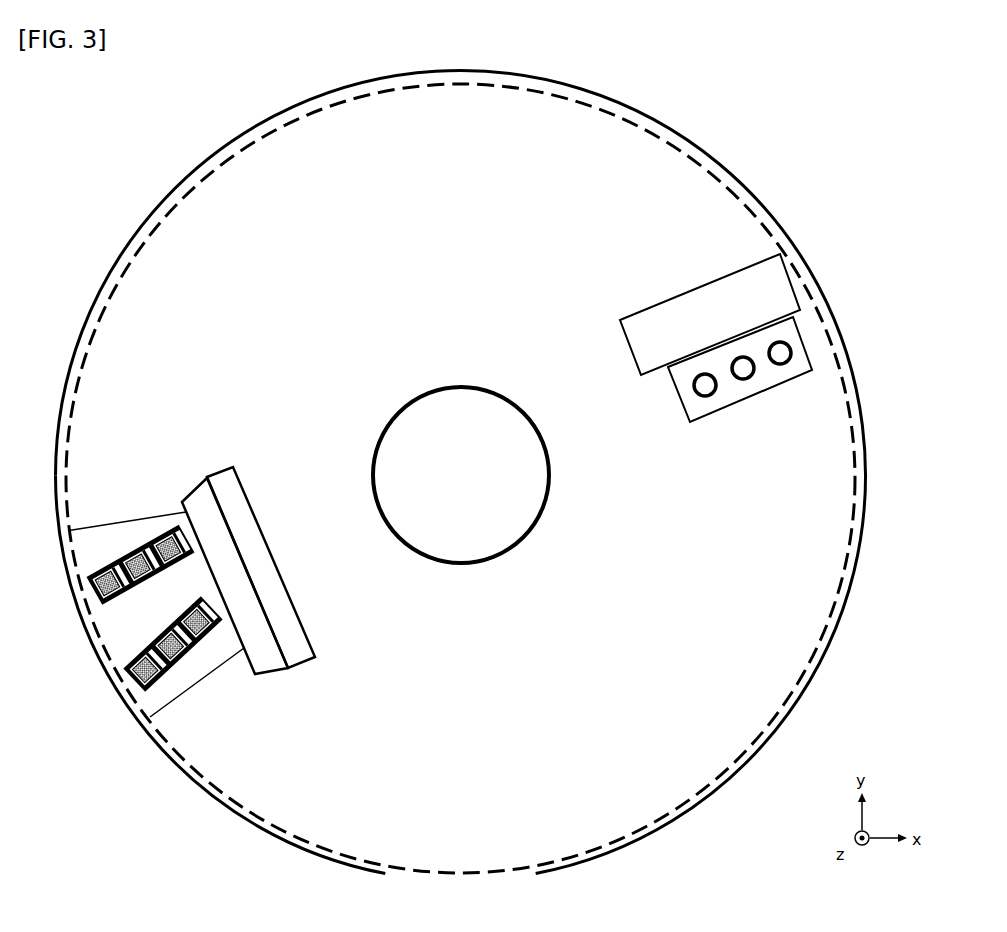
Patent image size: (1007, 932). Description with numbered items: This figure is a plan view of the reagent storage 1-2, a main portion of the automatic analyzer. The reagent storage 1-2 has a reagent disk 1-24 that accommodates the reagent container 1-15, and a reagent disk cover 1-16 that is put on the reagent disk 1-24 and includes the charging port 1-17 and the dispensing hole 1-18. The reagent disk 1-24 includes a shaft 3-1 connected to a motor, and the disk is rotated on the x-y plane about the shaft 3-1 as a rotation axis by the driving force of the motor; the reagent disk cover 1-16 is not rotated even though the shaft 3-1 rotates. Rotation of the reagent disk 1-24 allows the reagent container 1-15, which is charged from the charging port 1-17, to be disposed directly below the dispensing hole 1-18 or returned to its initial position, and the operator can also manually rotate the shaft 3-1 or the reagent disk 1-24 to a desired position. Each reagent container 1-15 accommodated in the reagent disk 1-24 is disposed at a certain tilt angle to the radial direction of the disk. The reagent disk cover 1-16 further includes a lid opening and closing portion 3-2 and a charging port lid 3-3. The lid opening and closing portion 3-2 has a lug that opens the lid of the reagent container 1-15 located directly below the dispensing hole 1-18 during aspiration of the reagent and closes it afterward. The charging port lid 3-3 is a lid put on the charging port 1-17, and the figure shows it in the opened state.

The reagent storage 1-2 is at (207, 120).
The reagent container 1-15 is at (192, 650).
The reagent disk cover 1-16 is at (222, 812).
The charging port 1-17 is at (125, 525).
The dispensing hole 1-18 is at (743, 380).
The reagent disk 1-24 is at (713, 171).
The shaft 3-1 is at (438, 388).
The lid opening and closing portion 3-2 is at (722, 310).
The charging port lid 3-3 is at (297, 663).